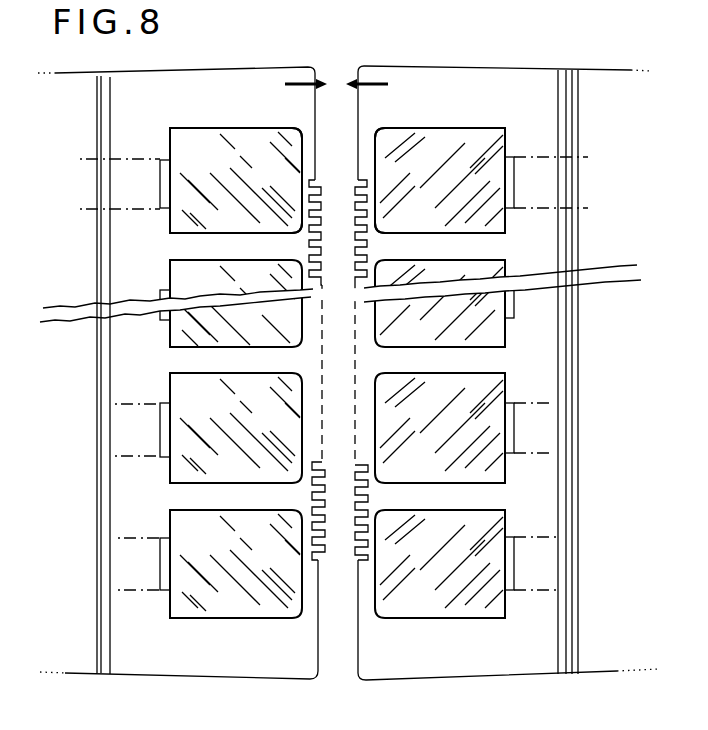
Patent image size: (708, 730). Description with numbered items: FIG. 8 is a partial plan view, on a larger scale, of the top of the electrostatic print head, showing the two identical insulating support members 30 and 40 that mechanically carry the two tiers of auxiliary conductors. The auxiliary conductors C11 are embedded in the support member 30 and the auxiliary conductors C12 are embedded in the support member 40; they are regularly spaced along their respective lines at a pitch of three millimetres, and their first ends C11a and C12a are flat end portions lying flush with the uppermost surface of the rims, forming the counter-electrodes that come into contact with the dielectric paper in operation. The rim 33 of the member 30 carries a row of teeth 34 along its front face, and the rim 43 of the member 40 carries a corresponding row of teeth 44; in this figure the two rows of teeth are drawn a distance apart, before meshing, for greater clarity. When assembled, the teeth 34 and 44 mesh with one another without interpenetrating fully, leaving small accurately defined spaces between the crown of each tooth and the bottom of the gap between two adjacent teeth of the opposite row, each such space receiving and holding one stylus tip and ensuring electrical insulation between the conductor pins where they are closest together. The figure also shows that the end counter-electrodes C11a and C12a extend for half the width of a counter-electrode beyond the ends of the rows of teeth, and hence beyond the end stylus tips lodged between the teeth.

The insulating support member 30 is at (92, 454).
The insulating support member 40 is at (584, 598).
The rim 33 is at (235, 638).
The rim 43 is at (447, 641).
The row of teeth 34 is at (316, 193).
The row of teeth 44 is at (358, 188).
The auxiliary conductor C11 is at (162, 164).
The first end of auxiliary conductor C11a is at (223, 164).
The auxiliary conductor C12 is at (514, 186).
The first end of auxiliary conductor C12a is at (464, 152).